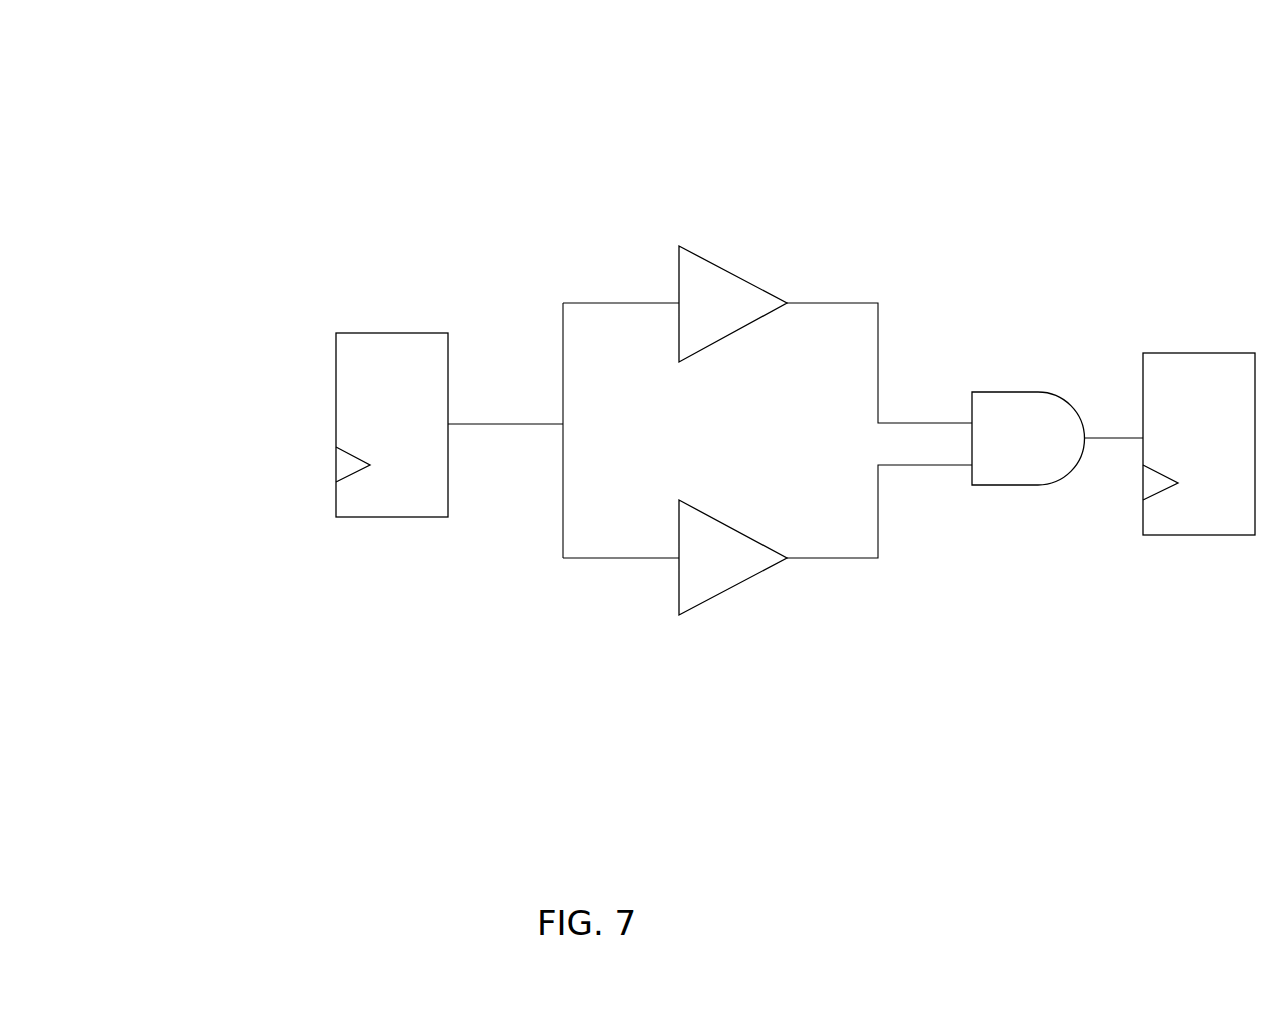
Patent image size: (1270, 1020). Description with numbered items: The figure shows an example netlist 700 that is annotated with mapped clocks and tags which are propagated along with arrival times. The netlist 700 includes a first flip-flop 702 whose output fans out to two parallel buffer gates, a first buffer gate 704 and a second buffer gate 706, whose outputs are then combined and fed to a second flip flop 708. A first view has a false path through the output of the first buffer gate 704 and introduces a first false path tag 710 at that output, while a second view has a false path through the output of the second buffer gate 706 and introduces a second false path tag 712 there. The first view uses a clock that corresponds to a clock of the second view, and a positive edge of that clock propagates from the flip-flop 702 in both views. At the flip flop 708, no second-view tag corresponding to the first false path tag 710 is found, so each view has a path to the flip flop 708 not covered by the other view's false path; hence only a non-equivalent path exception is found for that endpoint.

The netlist 700 is at (1072, 67).
The flip-flop 702 is at (403, 333).
The buffer gate 704 is at (680, 248).
The buffer gate 706 is at (680, 614).
The flip flop 708 is at (1213, 537).
The false path tag 710 is at (797, 163).
The false path tag 712 is at (842, 683).